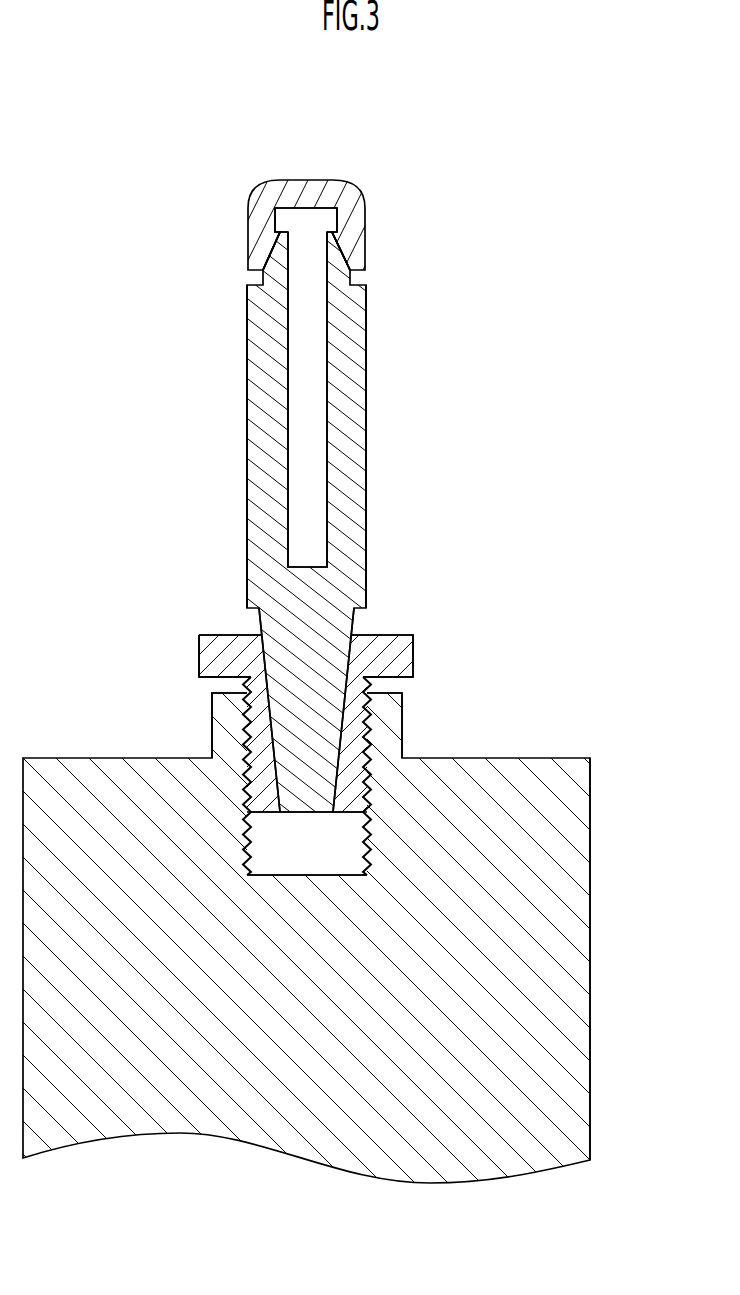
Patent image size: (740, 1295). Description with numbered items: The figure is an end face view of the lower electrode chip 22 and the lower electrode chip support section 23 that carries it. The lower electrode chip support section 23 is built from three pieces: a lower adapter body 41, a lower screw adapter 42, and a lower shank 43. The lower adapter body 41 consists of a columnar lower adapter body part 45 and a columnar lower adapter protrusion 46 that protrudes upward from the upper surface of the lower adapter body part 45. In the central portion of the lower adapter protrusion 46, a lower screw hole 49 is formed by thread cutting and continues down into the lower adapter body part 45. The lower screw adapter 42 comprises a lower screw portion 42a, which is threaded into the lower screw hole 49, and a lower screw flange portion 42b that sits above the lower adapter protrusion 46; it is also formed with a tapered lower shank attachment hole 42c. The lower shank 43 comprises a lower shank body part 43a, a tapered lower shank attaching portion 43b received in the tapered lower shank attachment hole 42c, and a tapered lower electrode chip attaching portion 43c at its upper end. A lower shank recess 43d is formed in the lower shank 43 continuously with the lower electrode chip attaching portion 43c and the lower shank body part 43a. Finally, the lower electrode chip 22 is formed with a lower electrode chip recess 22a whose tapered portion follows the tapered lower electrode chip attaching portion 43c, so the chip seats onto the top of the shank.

The lower electrode chip 22 is at (305, 190).
The lower electrode chip recess 22a is at (283, 218).
The lower electrode chip support section 23 is at (420, 350).
The lower shank 43 is at (372, 541).
The lower shank body part 43a is at (345, 447).
The lower shank attaching portion 43b is at (305, 793).
The lower electrode chip attaching portion 43c is at (337, 258).
The lower shank recess 43d is at (295, 405).
The lower screw adapter 42 is at (424, 649).
The lower screw portion 42a is at (248, 677).
The lower screw flange portion 42b is at (225, 642).
The lower shank attachment hole 42c is at (323, 800).
The lower adapter protrusion 46 is at (387, 732).
The lower screw hole 49 is at (247, 823).
The lower adapter body part 45 is at (575, 990).
The lower adapter body 41 is at (600, 1093).